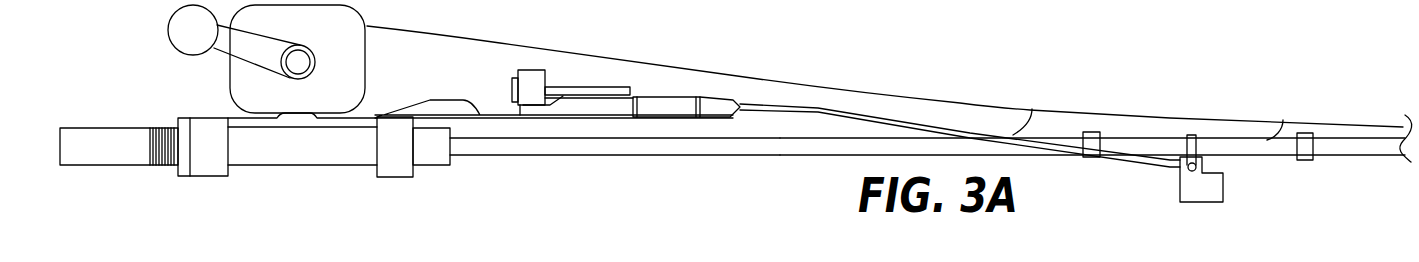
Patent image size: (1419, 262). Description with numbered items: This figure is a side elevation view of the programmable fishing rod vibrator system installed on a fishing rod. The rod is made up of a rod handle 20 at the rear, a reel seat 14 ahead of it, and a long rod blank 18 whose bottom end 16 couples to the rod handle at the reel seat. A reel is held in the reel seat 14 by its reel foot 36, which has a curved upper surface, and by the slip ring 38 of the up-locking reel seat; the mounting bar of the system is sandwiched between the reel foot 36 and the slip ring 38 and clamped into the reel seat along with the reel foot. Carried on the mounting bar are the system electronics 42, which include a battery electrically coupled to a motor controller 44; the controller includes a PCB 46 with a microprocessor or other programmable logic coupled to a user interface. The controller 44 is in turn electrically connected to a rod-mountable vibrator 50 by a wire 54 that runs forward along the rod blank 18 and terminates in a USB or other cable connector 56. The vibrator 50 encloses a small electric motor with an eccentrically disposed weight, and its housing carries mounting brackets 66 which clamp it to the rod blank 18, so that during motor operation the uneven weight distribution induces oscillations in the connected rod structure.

The reel seat 14 is at (315, 150).
The bottom end 16 is at (477, 155).
The rod blank 18 is at (762, 145).
The rod handle 20 is at (96, 150).
The reel foot 36 is at (365, 118).
The slip ring 38 is at (393, 133).
The system electronics 42 is at (533, 67).
The motor controller 44 is at (617, 103).
The PCB 46 is at (588, 85).
The rod-mountable vibrator 50 is at (1178, 175).
The wire 54 is at (818, 110).
The cable connector 56 is at (667, 107).
The mounting brackets 66 is at (1203, 140).